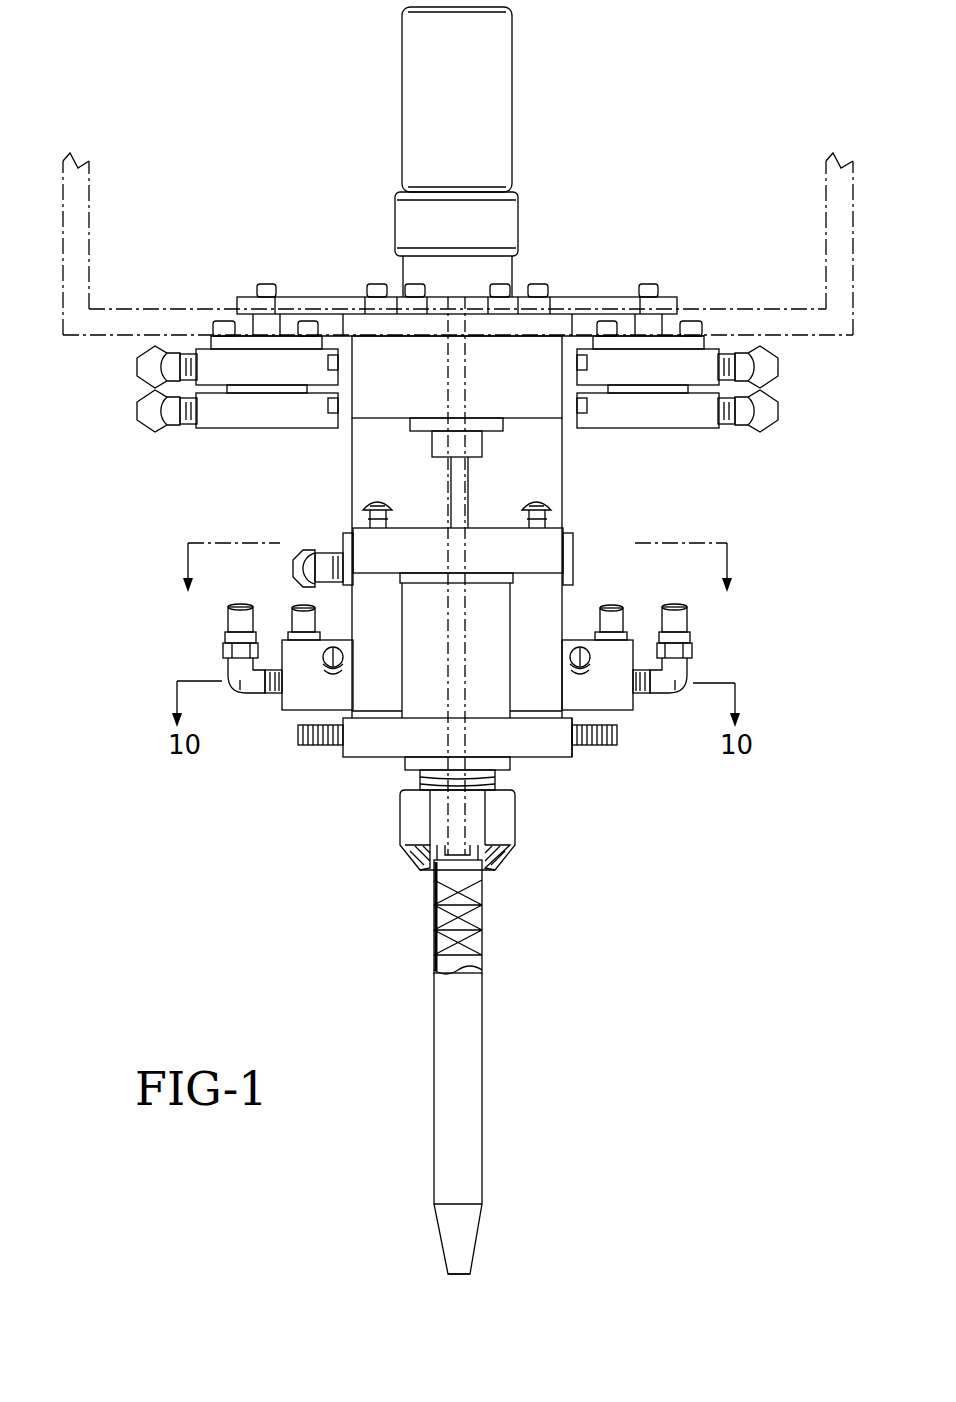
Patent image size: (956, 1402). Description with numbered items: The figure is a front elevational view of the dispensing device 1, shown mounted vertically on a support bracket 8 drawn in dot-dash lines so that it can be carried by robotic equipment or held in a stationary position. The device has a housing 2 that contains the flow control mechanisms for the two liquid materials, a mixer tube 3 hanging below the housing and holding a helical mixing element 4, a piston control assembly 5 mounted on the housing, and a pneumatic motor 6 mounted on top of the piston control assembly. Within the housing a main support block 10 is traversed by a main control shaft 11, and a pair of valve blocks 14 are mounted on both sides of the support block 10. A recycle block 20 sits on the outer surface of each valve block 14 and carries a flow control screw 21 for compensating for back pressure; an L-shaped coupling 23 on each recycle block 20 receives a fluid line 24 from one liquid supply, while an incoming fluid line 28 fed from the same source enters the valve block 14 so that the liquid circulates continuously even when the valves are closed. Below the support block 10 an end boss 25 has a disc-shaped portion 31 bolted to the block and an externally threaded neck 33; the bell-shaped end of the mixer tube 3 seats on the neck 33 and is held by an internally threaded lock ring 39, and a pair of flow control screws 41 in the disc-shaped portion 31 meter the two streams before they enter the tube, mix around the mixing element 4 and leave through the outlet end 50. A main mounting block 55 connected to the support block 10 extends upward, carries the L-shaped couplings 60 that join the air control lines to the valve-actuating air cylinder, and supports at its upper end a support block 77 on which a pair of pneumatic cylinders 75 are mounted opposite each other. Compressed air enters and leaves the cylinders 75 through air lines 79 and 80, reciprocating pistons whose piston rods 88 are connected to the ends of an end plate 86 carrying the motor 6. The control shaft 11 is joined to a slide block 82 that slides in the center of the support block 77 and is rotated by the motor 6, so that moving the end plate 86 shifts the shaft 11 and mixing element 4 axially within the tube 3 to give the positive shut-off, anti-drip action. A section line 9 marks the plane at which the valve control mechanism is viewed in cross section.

The dispensing device 1 is at (628, 141).
The housing 2 is at (575, 496).
The mixer tube 3 is at (480, 1068).
The mixing element 4 is at (463, 937).
The piston control assembly 5 is at (214, 447).
The pneumatic motor 6 is at (504, 66).
The support bracket 8 is at (90, 180).
The section line 9 is at (459, 581).
The main support block 10 is at (483, 605).
The main control shaft 11 is at (455, 488).
The valve blocks 14 is at (390, 695).
The recycle block 20 is at (290, 652).
The flow control screw 21 is at (327, 670).
The L-shaped coupling 23 is at (252, 688).
The fluid line 24 is at (233, 620).
The end boss 25 is at (354, 768).
The incoming fluid line 28 is at (605, 612).
The disc-shaped portion 31 is at (565, 752).
The externally threaded neck 33 is at (485, 790).
The lock ring 39 is at (503, 835).
The flow control screws 41 is at (320, 748).
The outlet end 50 is at (462, 1275).
The main mounting block 55 is at (367, 453).
The L-shaped couplings 60 is at (315, 558).
The pneumatic cylinders 75 is at (215, 360).
The support block 77 is at (530, 357).
The air lines 79 is at (150, 364).
The air lines 80 is at (150, 410).
The slide block 82 is at (498, 427).
The end plate 86 is at (318, 297).
The piston rods 88 is at (265, 323).